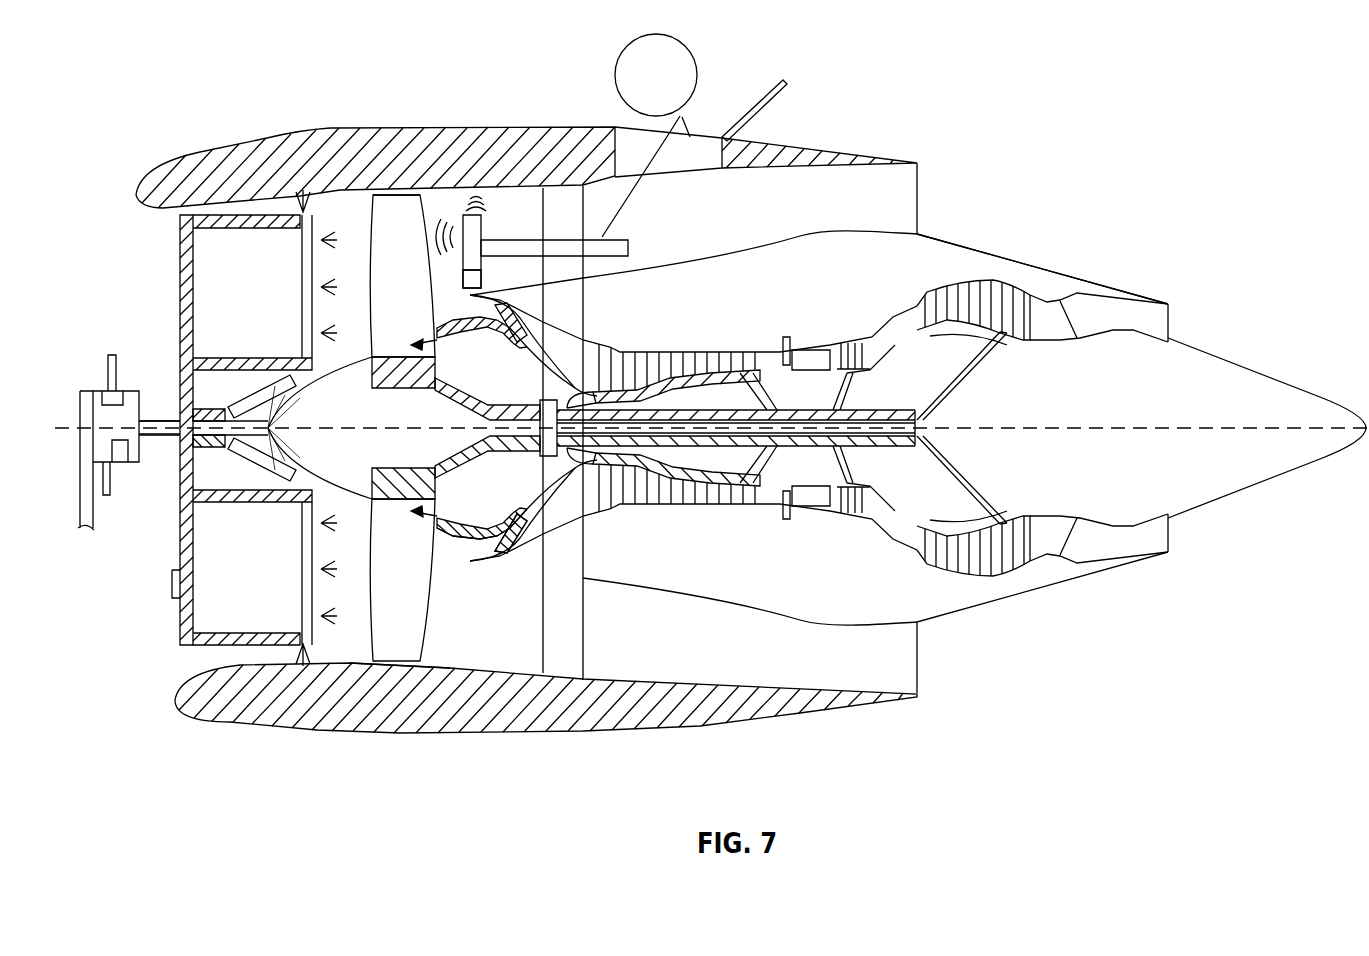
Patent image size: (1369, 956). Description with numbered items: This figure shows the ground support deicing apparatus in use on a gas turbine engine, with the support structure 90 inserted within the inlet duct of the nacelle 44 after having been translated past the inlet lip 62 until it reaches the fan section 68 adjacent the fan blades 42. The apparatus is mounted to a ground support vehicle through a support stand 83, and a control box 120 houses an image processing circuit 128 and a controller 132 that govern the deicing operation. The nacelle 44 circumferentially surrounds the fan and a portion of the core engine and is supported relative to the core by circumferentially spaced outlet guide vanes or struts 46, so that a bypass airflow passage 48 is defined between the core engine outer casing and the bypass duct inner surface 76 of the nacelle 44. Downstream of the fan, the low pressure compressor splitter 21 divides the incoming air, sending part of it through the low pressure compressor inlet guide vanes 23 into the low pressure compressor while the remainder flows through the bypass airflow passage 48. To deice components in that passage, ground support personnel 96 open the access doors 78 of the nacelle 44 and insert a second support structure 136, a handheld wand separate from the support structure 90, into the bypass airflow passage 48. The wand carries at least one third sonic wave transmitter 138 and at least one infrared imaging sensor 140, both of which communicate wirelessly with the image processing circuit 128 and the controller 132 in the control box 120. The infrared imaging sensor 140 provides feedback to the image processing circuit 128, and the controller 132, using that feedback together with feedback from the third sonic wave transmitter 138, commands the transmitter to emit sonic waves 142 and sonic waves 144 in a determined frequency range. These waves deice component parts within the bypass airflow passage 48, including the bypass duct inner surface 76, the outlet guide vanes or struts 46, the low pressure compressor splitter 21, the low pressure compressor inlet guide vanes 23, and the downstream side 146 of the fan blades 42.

The low pressure compressor splitter 21 is at (468, 572).
The low pressure compressor inlet guide vanes 23 is at (505, 563).
The fan blades 42 is at (398, 210).
The nacelle 44 is at (247, 147).
The outlet guide vanes or struts 46 is at (573, 190).
The bypass airflow passage 48 is at (885, 221).
The inlet lip 62 is at (213, 712).
The fan section 68 is at (396, 678).
The bypass duct inner surface 76 is at (766, 185).
The access doors 78 is at (785, 90).
The support stand 83 is at (84, 500).
The support structure 90 is at (180, 290).
The ground support personnel 96 is at (702, 45).
The control box 120 is at (96, 435).
The image processing circuit 128 is at (121, 458).
The controller 132 is at (107, 398).
The second support structure 136 is at (530, 243).
The third sonic wave transmitter 138 is at (422, 190).
The infrared imaging sensor 140 is at (466, 278).
The sonic waves 142 is at (430, 232).
The sonic waves 144 is at (478, 184).
The downstream side of fan blades 146 is at (583, 295).